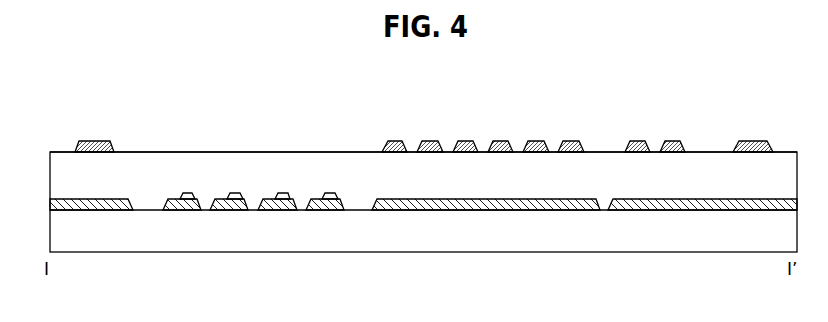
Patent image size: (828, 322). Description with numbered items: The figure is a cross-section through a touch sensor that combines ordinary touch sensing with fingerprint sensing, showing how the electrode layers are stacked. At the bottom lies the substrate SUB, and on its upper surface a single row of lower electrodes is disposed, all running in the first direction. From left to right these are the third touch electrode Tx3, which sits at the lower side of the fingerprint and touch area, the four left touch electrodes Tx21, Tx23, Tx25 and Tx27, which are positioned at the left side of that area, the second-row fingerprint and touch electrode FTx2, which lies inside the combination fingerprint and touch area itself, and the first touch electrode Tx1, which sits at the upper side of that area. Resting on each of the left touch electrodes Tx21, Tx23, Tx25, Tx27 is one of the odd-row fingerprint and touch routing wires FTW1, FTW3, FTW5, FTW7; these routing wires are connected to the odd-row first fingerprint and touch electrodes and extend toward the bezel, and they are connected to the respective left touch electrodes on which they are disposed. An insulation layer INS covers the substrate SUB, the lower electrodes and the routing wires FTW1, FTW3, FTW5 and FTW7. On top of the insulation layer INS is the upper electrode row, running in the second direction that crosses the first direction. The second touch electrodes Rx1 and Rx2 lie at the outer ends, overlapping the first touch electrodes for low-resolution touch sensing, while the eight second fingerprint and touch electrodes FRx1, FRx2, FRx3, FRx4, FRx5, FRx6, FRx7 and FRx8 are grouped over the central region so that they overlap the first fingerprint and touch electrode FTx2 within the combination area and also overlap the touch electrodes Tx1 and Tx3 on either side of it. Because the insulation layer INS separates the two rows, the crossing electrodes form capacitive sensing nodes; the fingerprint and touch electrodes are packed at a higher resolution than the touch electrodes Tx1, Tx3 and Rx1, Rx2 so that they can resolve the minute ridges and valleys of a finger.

The substrate SUB is at (213, 238).
The insulation layer INS is at (360, 187).
The 1-1 touch electrode Tx1 is at (695, 210).
The 1-3 touch electrode Tx3 is at (83, 210).
The 1-2 left touch electrode Tx21 is at (314, 200).
The 1-2 left touch electrode Tx23 is at (267, 200).
The 1-2 left touch electrode Tx25 is at (219, 200).
The 1-2 left touch electrode Tx27 is at (172, 200).
The 1-1 fingerprint and touch routing wire FTW1 is at (330, 193).
The 1-1 fingerprint and touch routing wire FTW3 is at (282, 193).
The 1-1 fingerprint and touch routing wire FTW5 is at (233, 193).
The 1-1 fingerprint and touch routing wire FTW7 is at (186, 193).
The 1-2 fingerprint and touch electrode FTx2 is at (472, 208).
The second touch electrode Rx1 is at (93, 141).
The second touch electrode Rx2 is at (752, 141).
The second fingerprint and touch electrode FRx1 is at (393, 141).
The second fingerprint and touch electrode FRx2 is at (428, 141).
The second fingerprint and touch electrode FRx3 is at (463, 141).
The second fingerprint and touch electrode FRx4 is at (500, 141).
The second fingerprint and touch electrode FRx5 is at (536, 141).
The second fingerprint and touch electrode FRx6 is at (571, 141).
The second fingerprint and touch electrode FRx7 is at (636, 141).
The second fingerprint and touch electrode FRx8 is at (673, 141).